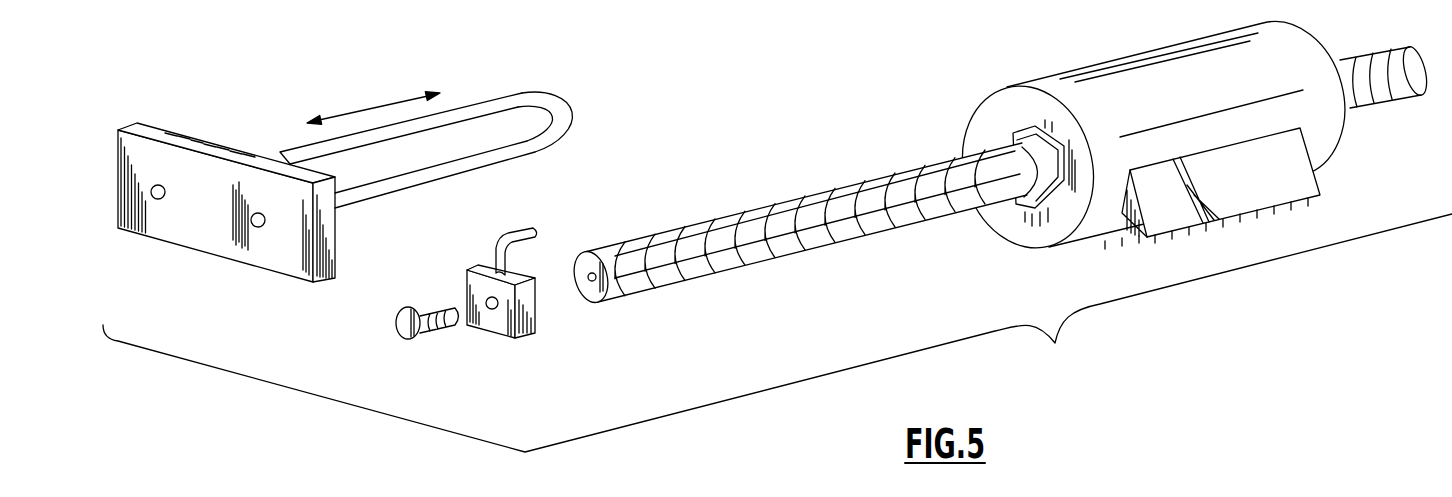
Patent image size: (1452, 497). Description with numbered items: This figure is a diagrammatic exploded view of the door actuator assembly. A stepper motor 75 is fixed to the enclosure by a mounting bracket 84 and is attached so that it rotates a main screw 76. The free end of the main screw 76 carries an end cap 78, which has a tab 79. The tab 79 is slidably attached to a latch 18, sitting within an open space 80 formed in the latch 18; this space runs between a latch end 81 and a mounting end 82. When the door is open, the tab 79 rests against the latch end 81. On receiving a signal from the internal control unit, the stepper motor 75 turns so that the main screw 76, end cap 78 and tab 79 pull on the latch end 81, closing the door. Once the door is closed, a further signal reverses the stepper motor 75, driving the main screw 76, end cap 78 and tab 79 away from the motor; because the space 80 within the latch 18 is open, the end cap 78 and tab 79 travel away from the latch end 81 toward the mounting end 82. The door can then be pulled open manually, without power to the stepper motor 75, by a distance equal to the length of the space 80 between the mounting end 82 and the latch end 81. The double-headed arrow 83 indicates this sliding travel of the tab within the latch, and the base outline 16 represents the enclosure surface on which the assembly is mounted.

The base 16 is at (777, 333).
The latch 18 is at (380, 167).
The stepper motor 75 is at (1027, 232).
The main screw 76 is at (755, 222).
The end cap 78 is at (510, 338).
The tab 79 is at (540, 232).
The space 80 is at (426, 136).
The latch end 81 is at (533, 112).
The mounting end 82 is at (183, 140).
The direction of movement 83 is at (382, 106).
The mounting bracket 84 is at (1291, 186).